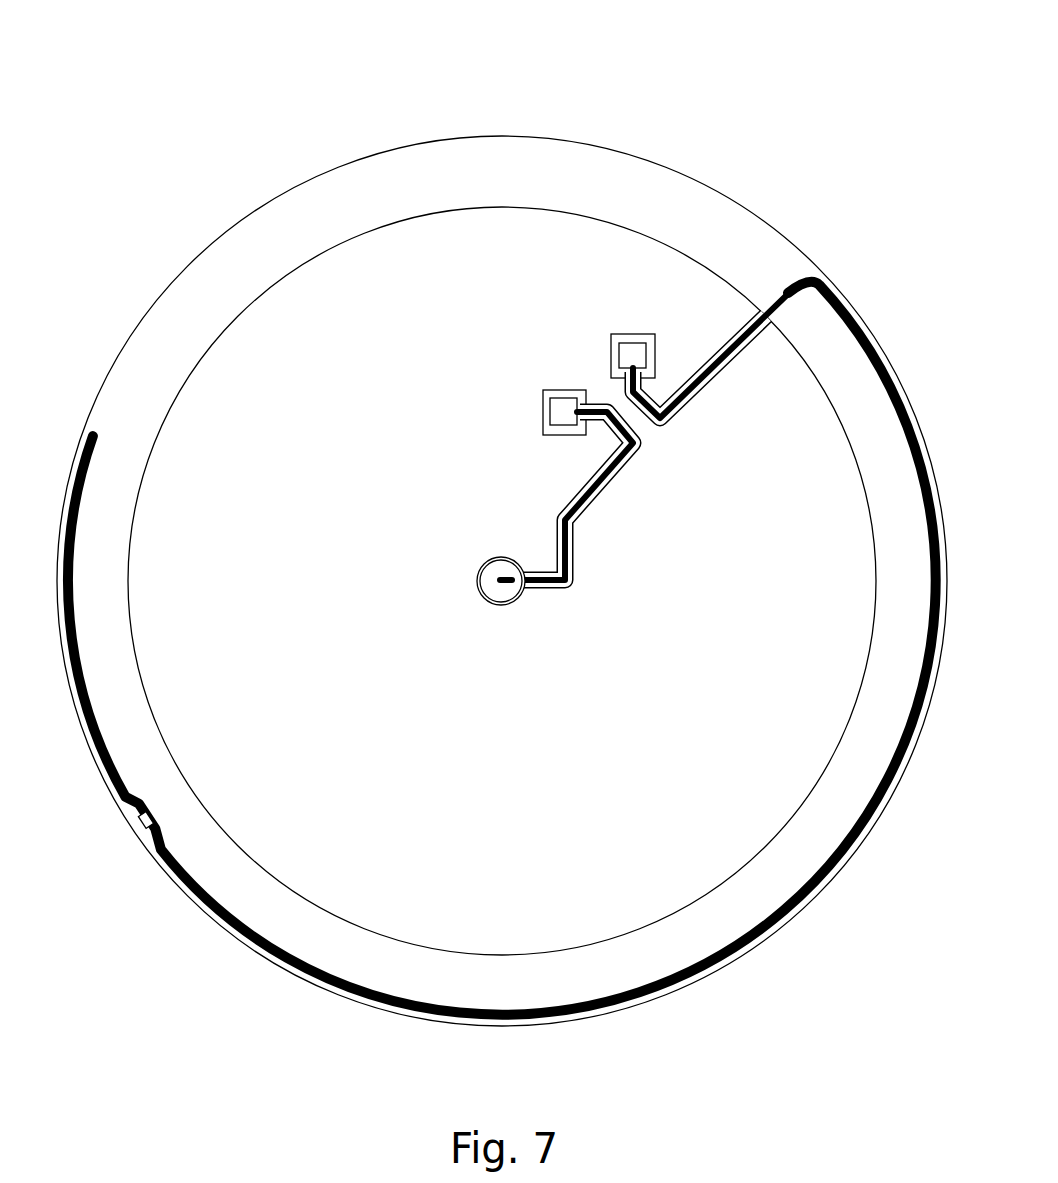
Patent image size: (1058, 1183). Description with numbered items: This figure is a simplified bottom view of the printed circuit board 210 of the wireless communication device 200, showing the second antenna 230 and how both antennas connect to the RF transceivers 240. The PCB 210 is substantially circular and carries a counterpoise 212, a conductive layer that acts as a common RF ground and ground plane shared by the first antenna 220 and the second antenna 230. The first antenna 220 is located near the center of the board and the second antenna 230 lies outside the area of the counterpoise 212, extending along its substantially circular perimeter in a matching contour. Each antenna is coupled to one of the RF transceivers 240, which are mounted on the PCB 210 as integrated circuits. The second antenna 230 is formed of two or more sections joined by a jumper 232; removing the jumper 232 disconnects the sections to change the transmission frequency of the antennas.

The wireless communication device 200 is at (545, 95).
The printed circuit board 210 is at (187, 263).
The counterpoise 212 is at (400, 377).
The first antenna 220 is at (505, 590).
The second antenna 230 is at (710, 972).
The jumper 232 is at (145, 822).
The RF transceivers 240 is at (565, 415).